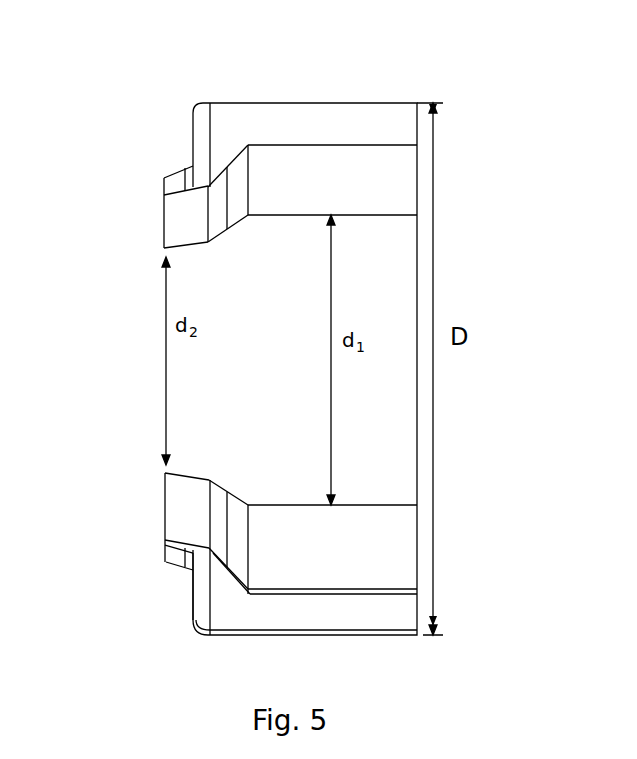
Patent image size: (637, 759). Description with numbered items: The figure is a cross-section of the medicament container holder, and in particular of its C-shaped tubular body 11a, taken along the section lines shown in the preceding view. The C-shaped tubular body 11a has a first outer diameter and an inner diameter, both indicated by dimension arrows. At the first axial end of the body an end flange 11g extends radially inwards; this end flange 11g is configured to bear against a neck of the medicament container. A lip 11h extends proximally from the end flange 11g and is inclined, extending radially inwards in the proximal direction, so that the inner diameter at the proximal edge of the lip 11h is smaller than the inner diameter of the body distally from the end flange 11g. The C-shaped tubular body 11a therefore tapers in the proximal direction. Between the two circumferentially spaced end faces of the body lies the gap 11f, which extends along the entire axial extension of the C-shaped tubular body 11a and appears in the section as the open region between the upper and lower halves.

The C-shaped tubular body 11a is at (367, 127).
The lip 11h is at (166, 190).
The end flange 11g is at (227, 226).
The gap 11f is at (150, 397).